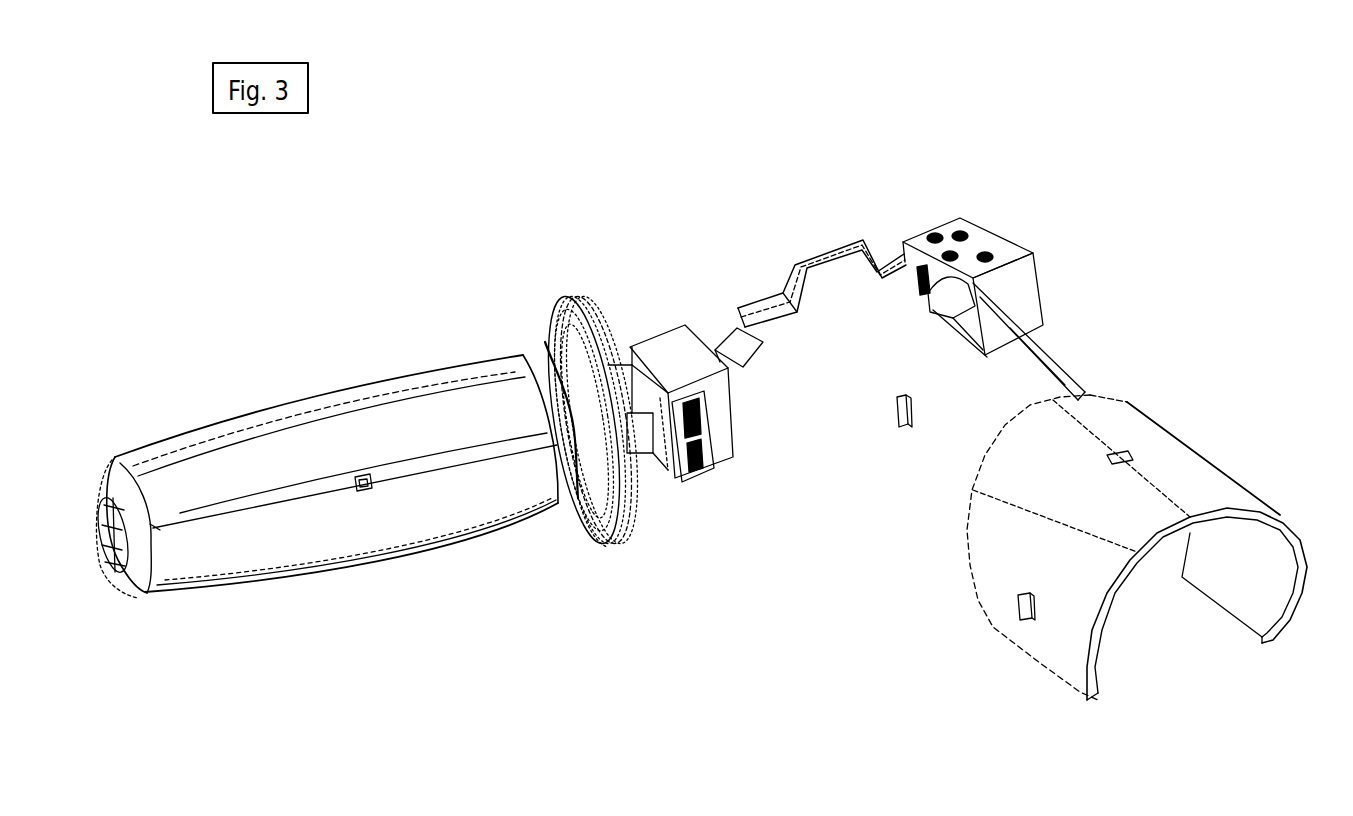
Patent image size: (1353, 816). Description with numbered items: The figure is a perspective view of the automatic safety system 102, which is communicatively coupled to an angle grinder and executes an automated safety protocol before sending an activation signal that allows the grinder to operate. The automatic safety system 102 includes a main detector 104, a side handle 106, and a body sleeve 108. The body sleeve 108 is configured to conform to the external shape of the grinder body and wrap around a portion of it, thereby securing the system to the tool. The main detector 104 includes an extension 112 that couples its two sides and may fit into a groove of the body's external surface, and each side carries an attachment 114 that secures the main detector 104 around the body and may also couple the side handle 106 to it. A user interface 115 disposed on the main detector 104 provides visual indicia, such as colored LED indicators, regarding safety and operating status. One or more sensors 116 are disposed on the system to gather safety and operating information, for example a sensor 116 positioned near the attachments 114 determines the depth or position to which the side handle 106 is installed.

The automatic safety system 102 is at (647, 556).
The main detector 104 is at (1003, 340).
The side handle 106 is at (193, 553).
The body sleeve 108 is at (1243, 600).
The extension 112 is at (837, 253).
The attachment 114 is at (730, 407).
The user interface 115 is at (1007, 250).
The sensors 116 is at (363, 483).